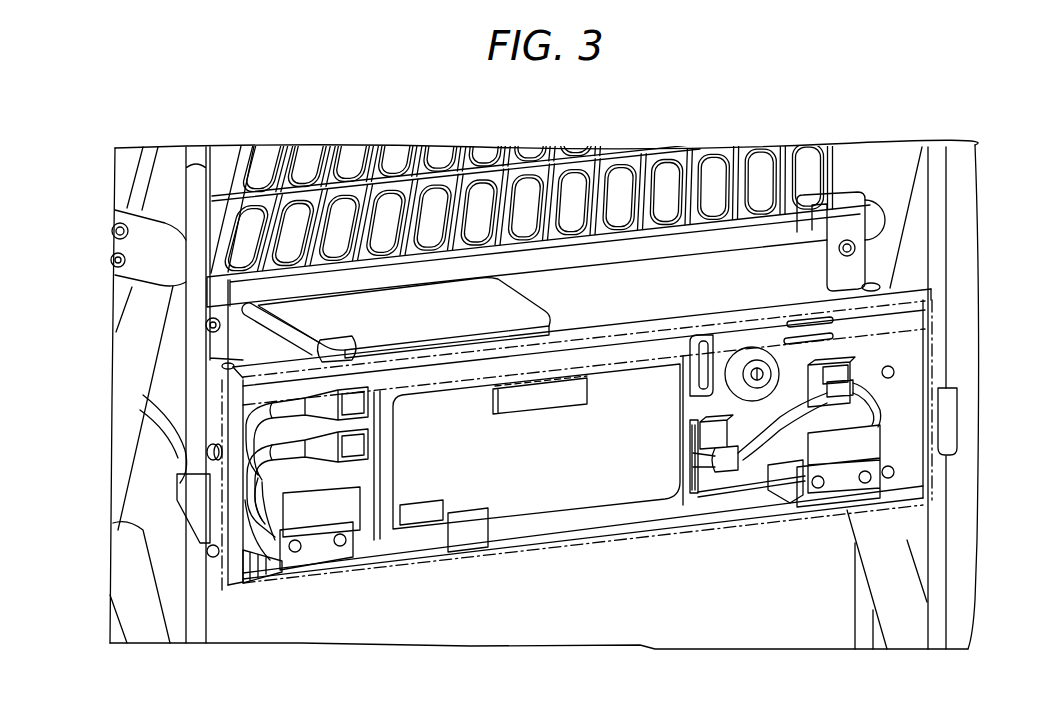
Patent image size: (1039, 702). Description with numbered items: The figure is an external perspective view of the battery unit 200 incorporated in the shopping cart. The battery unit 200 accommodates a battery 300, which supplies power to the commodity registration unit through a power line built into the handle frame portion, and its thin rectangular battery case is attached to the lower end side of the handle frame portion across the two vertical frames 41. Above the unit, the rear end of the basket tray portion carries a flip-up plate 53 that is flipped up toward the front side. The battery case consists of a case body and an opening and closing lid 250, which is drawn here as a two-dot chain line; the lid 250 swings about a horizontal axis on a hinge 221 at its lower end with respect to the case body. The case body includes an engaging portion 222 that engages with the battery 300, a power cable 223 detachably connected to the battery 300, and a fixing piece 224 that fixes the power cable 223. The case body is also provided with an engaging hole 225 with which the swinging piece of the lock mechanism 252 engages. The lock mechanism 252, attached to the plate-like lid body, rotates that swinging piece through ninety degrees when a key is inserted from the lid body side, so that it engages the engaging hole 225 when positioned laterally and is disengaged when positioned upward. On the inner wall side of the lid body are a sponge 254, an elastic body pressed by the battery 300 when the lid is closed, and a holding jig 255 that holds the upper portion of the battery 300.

The vertical frame 41 is at (135, 368).
The flip-up plate 53 is at (433, 147).
The battery unit 200 is at (628, 395).
The opening and closing lid 250 is at (576, 342).
The holding jig 255 is at (568, 362).
The lock mechanism 252 is at (758, 358).
The power cable 223 is at (813, 490).
The engaging hole 225 is at (697, 375).
The sponge 254 is at (533, 400).
The battery 300 is at (520, 473).
The hinge 221 is at (322, 513).
The engaging portion 222 is at (470, 533).
The fixing piece 224 is at (837, 388).